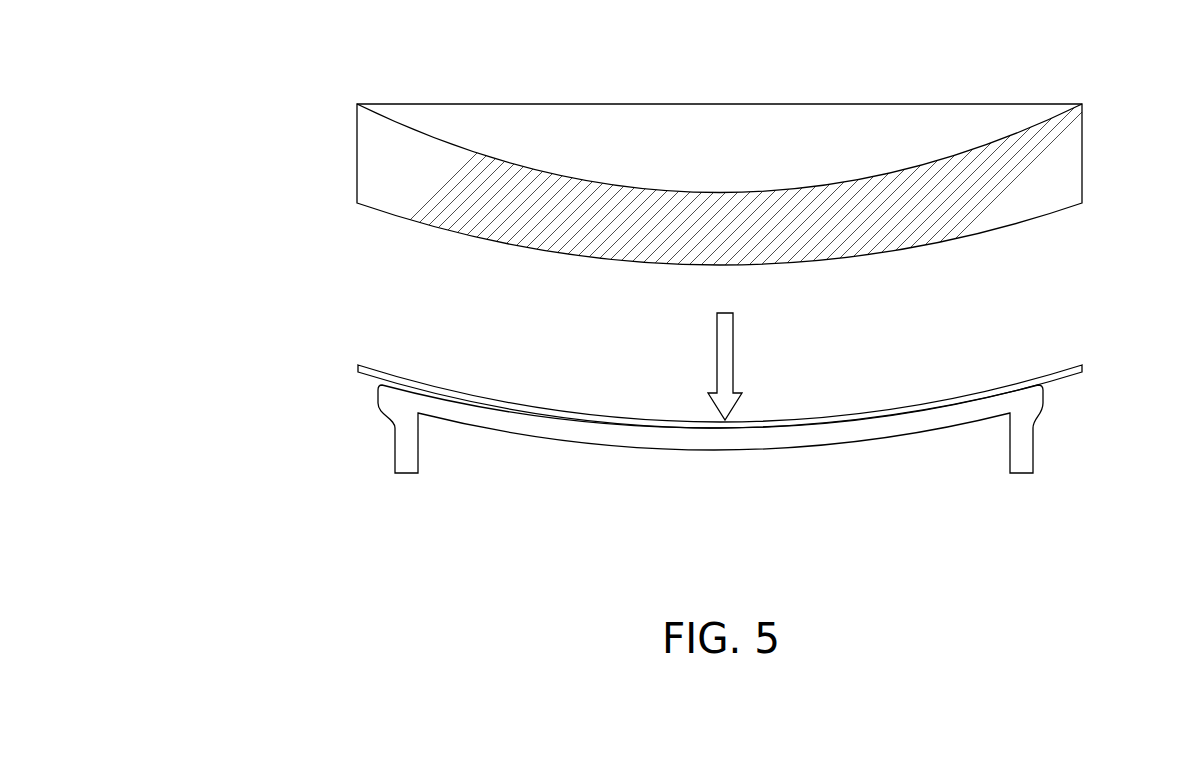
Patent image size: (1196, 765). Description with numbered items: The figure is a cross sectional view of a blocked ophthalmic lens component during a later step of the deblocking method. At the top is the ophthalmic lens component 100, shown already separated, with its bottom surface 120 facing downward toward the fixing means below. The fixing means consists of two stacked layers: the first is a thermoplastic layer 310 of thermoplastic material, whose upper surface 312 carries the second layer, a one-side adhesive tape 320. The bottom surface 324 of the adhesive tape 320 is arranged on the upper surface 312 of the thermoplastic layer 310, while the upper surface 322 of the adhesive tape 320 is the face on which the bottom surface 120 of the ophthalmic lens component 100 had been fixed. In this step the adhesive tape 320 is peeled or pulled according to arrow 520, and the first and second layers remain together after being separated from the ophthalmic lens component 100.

The ophthalmic lens component 100 is at (970, 103).
The bottom surface 120 is at (1027, 219).
The thermoplastic layer 310 is at (1046, 389).
The upper surface 312 is at (527, 411).
The one-side adhesive tape 320 is at (1031, 381).
The upper surface 322 is at (430, 385).
The bottom surface 324 is at (377, 381).
The arrow 520 is at (718, 367).